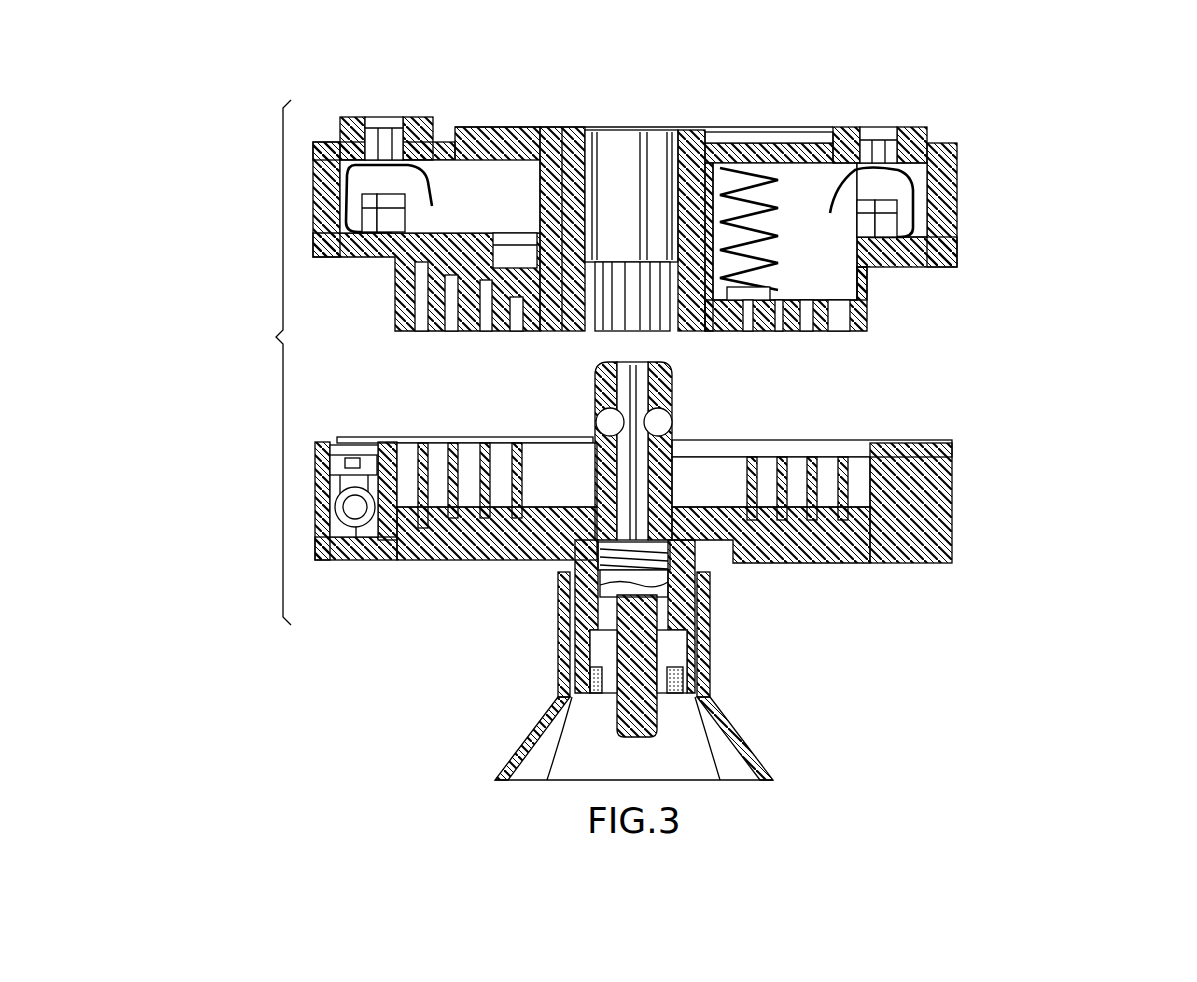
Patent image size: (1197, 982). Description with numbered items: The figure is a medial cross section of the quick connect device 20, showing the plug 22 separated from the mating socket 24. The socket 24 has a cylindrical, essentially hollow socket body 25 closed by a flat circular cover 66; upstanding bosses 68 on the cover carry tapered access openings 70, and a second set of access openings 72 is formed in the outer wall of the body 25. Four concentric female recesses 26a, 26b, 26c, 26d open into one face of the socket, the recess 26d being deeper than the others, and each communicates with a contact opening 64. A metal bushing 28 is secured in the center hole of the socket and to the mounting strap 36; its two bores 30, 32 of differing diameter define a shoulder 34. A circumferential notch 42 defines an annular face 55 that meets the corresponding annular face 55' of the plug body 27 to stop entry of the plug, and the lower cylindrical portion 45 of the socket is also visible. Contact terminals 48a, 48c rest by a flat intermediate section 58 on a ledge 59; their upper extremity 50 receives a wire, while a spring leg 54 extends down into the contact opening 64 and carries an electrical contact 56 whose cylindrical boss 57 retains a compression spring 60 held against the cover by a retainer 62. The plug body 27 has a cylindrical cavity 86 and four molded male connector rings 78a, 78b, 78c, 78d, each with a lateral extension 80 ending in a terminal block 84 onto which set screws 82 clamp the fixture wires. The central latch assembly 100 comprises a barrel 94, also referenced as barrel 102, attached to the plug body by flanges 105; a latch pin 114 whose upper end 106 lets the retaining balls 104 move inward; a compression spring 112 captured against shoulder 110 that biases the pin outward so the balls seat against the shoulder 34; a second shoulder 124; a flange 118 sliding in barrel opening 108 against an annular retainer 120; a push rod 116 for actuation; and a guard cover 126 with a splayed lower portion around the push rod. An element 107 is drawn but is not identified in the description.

The quick connect device 20 is at (268, 338).
The plug 22 is at (1017, 509).
The socket 24 is at (1000, 207).
The socket body 25 is at (942, 252).
The female recess 26a is at (748, 332).
The female recess 26b is at (820, 333).
The female recess 26c is at (855, 345).
The female recess 26d is at (860, 340).
The plug body 27 is at (937, 542).
The bushing 28 is at (575, 128).
The bore 30 is at (662, 438).
The bore 32 is at (641, 145).
The shoulder 34 is at (595, 255).
The mounting strap 36 is at (778, 128).
The circumferential notch 42 is at (391, 311).
The lower cylindrical portion 45 is at (840, 312).
The contact terminal 48a is at (398, 125).
The contact terminal 48c is at (990, 135).
The upper extremity 50 is at (470, 128).
The spring leg 54 is at (874, 289).
The annular face 55 is at (692, 274).
The annular face 55' is at (1022, 439).
The electrical contact member 56 is at (705, 380).
The cylindrical boss 57 is at (645, 332).
The intermediate section 58 is at (465, 224).
The ledge 59 is at (452, 237).
The compression spring 60 is at (770, 215).
The retainer 62 is at (745, 125).
The contact opening 64 is at (420, 333).
The cover 66 is at (442, 128).
The boss 68 is at (338, 124).
The tapered access opening 70 is at (383, 112).
The access opening 72 is at (316, 196).
The male connector ring 78a is at (780, 563).
The male connector ring 78b is at (790, 480).
The male connector ring 78c is at (453, 562).
The male connector ring 78d is at (405, 562).
The lateral extension 80 is at (425, 562).
The set screw 82 is at (345, 468).
The terminal block 84 is at (352, 562).
The cylindrical cavity 86 is at (552, 468).
The barrel 94 is at (580, 563).
The latch assembly 100 is at (745, 665).
The barrel 102 is at (672, 473).
The retaining balls 104 is at (603, 405).
The lateral extensions or flanges 105 is at (562, 530).
The upper end of latch pin 106 is at (637, 332).
The bearing race 107 is at (588, 420).
The barrel opening 108 is at (598, 648).
The annular shoulder 110 is at (665, 535).
The compression spring 112 is at (590, 598).
The latch pin 114 is at (668, 468).
The push rod 116 is at (740, 803).
The annular flange 118 is at (740, 702).
The annular retainer 120 is at (548, 782).
The annular shoulder 124 is at (575, 622).
The guard cover 126 is at (505, 762).